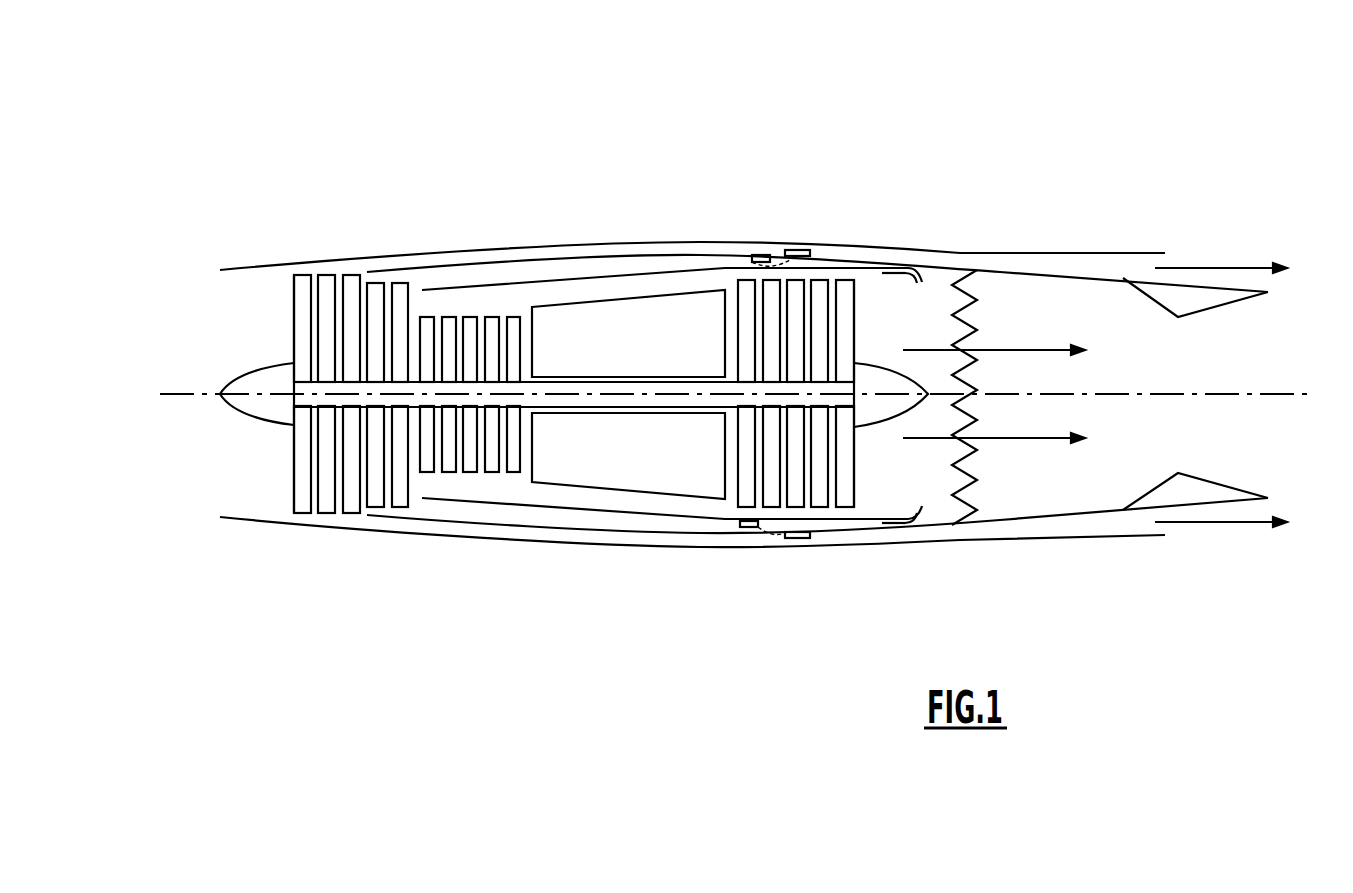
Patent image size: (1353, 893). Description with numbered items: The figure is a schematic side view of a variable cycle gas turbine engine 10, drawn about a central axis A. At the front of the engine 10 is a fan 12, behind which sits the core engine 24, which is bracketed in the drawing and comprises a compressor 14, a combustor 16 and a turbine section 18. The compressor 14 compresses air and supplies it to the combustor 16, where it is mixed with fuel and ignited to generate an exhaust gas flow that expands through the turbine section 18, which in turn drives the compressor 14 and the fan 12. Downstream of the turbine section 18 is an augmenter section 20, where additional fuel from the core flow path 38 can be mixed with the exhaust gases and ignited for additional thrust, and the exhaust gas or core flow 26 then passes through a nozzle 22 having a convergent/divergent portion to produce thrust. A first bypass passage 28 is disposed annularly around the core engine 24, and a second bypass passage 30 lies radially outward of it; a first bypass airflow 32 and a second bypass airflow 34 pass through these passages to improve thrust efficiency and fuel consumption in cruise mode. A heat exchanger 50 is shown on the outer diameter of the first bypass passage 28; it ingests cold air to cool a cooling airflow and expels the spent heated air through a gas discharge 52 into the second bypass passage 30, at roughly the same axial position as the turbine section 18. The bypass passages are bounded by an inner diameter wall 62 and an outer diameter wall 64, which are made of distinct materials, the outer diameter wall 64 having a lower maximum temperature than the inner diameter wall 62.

The variable cycle gas turbine engine 10 is at (727, 397).
The fan 12 is at (245, 481).
The compressor 14 is at (468, 472).
The combustor 16 is at (635, 477).
The turbine section 18 is at (833, 433).
The augmenter section 20 is at (975, 458).
The nozzle 22 is at (1178, 493).
The core engine 24 is at (574, 506).
The core flow 26 is at (1040, 440).
The first bypass passage 28 is at (448, 278).
The second bypass passage 30 is at (563, 253).
The first bypass airflow 32 is at (933, 300).
The second bypass airflow 34 is at (1215, 267).
The core flow path 38 is at (885, 288).
The heat exchanger 50 is at (760, 255).
The gas discharge 52 is at (800, 250).
The inner diameter wall 62 is at (643, 257).
The outer diameter wall 64 is at (697, 243).
The engine centerline axis A is at (1225, 392).